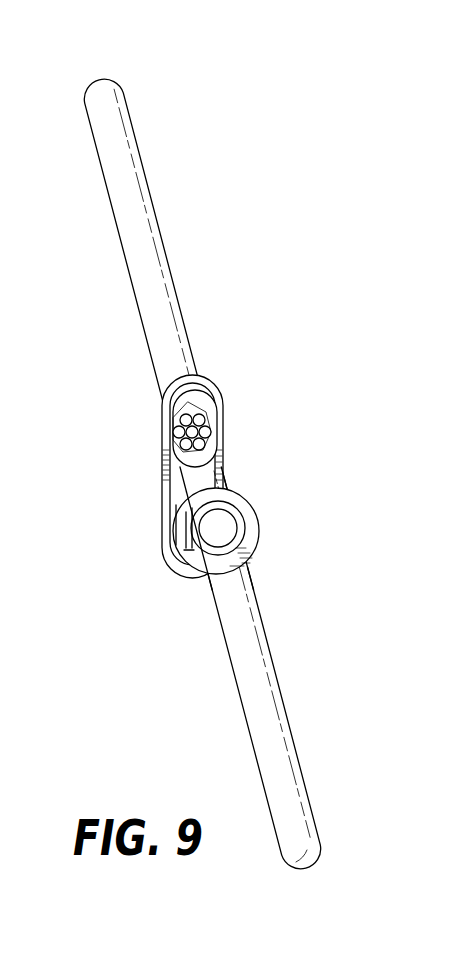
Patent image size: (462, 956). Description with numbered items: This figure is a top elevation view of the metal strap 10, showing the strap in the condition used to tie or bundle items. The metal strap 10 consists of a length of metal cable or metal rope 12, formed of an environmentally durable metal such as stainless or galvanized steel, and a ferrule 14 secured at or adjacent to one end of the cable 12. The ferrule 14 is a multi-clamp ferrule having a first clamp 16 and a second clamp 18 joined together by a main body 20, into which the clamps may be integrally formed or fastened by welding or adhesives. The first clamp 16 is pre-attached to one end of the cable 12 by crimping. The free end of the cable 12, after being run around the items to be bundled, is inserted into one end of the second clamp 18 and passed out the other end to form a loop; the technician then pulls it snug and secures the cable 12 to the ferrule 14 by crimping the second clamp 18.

The metal strap 10 is at (279, 156).
The metal cable or metal rope 12 is at (214, 643).
The ferrule 14 is at (134, 447).
The first clamp 16 is at (226, 400).
The second clamp 18 is at (258, 530).
The main body 20 is at (161, 477).